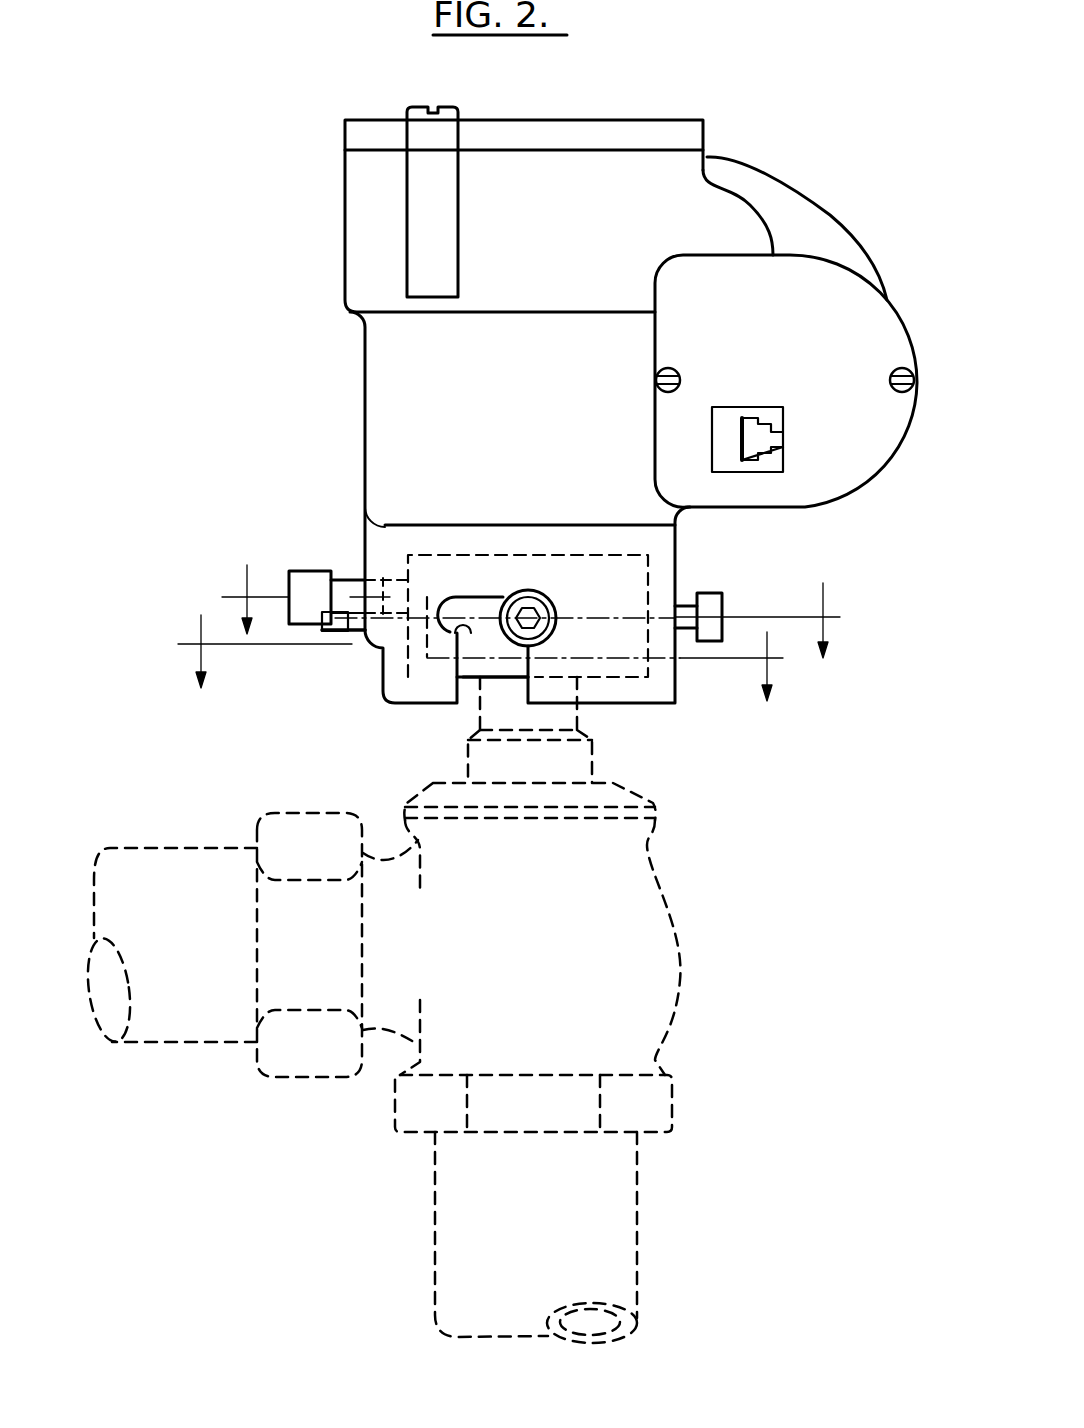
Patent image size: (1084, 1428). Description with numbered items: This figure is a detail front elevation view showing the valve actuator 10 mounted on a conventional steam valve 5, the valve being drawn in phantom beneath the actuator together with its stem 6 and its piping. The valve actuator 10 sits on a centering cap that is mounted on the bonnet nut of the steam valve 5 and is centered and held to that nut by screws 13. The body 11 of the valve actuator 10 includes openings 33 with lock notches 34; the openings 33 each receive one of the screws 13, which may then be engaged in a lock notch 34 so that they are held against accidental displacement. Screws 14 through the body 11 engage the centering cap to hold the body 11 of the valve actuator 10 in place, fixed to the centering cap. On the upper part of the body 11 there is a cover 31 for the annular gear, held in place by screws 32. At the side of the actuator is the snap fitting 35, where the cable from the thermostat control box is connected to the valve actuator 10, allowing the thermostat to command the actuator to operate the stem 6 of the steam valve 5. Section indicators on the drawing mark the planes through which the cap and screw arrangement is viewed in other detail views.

The steam valve 5 is at (762, 866).
The stem 6 is at (502, 636).
The valve actuator 10 is at (752, 161).
The body 11 is at (535, 399).
The screws 13 is at (557, 605).
The screws 14 is at (303, 571).
The cover 31 is at (604, 120).
The screws 32 is at (407, 110).
The openings 33 is at (473, 690).
The lock notches 34 is at (460, 653).
The snap fitting 35 is at (755, 442).